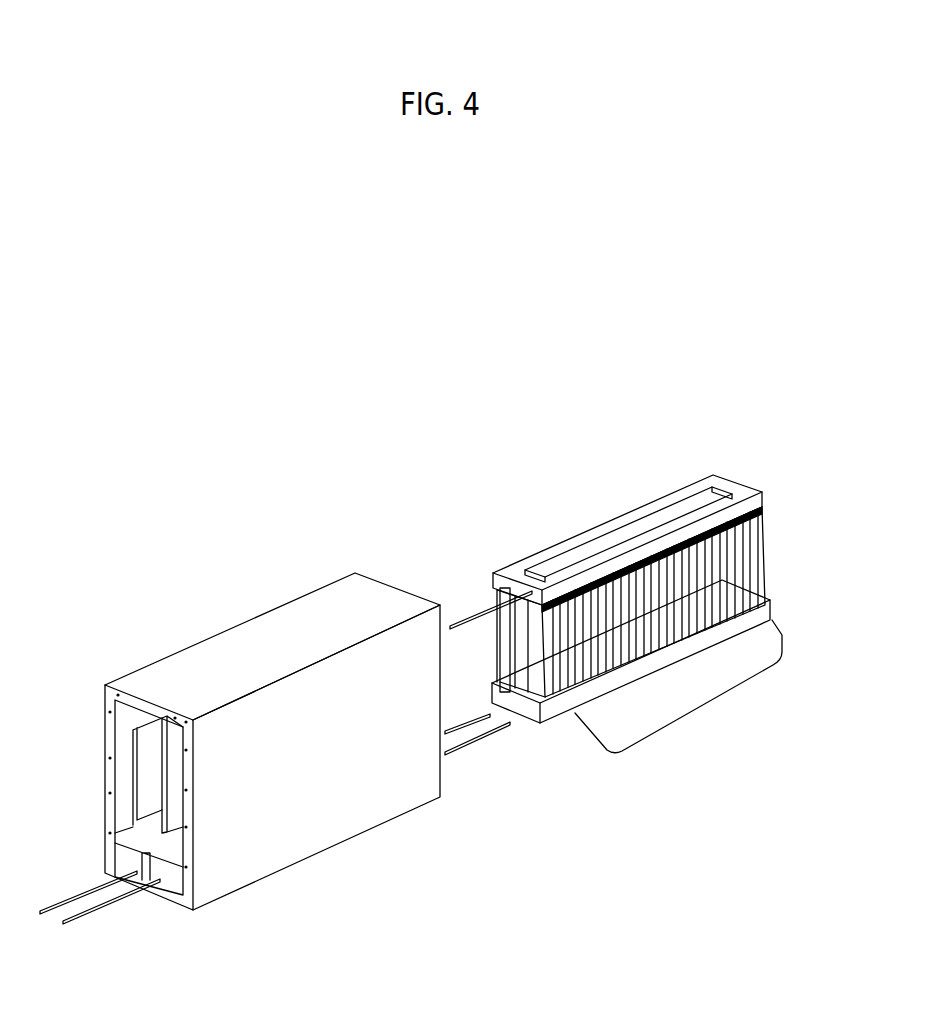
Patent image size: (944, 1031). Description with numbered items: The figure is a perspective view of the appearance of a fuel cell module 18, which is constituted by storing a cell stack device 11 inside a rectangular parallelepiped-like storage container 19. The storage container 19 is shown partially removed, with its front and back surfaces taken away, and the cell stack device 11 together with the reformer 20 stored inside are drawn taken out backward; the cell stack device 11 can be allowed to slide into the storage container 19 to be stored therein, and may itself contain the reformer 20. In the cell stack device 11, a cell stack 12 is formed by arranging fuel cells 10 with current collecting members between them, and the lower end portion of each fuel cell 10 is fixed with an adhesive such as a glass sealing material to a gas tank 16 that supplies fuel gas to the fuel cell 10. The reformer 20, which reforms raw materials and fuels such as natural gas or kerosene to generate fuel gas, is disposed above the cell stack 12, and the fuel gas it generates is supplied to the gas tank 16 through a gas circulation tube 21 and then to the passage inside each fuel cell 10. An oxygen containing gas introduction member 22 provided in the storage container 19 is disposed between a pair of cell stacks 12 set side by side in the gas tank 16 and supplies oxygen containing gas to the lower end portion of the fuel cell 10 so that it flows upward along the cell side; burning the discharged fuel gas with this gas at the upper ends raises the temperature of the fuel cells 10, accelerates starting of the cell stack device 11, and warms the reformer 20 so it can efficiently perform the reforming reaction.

The fuel cell 10 is at (762, 540).
The cell stack device 11 is at (663, 477).
The cell stack 12 is at (707, 703).
The gas tank 16 is at (553, 715).
The fuel cell module 18 is at (218, 352).
The storage container 19 is at (275, 625).
The reformer 20 is at (505, 587).
The gas circulation tube 21 is at (500, 592).
The oxygen containing gas introduction member 22 is at (177, 762).